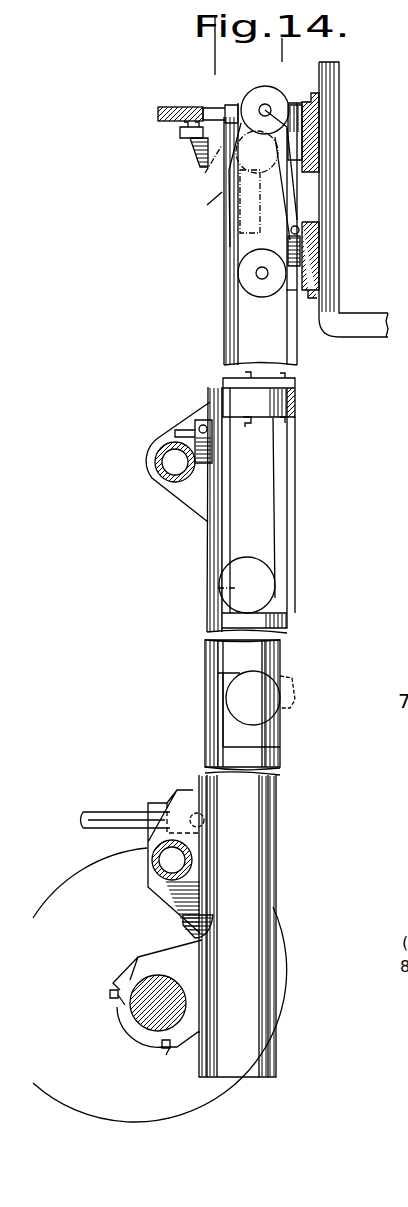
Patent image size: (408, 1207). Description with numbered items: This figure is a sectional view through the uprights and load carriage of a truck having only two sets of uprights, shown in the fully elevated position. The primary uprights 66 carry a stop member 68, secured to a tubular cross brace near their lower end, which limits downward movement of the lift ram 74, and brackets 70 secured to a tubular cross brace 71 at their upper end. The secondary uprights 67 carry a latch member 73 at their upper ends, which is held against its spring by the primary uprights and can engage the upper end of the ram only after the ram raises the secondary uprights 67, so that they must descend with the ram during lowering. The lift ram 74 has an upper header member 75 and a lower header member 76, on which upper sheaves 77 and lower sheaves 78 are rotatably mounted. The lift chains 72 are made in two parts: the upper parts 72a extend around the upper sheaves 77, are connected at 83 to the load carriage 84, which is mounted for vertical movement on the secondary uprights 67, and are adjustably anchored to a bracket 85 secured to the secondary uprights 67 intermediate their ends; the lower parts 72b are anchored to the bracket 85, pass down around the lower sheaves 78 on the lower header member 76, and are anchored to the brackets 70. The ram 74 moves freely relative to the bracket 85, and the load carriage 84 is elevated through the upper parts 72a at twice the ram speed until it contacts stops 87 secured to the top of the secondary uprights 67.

The primary uprights 66 is at (272, 850).
The secondary uprights 67 is at (292, 495).
The stop member 68 is at (175, 918).
The brackets 70 is at (197, 437).
The tubular cross brace 71 is at (163, 475).
The lift chains 72 is at (283, 452).
The upper chain parts 72a is at (232, 360).
The lower chain parts 72b is at (218, 588).
The latch member 73 is at (193, 157).
The lift ram 74 is at (262, 672).
The upper header member 75 is at (203, 173).
The lower header member 76 is at (296, 700).
The upper sheaves 77 is at (203, 205).
The lower sheaves 78 is at (240, 725).
The chain connection 83 is at (300, 231).
The load carriage 84 is at (339, 196).
The bracket 85 is at (296, 398).
The stops 87 is at (240, 115).